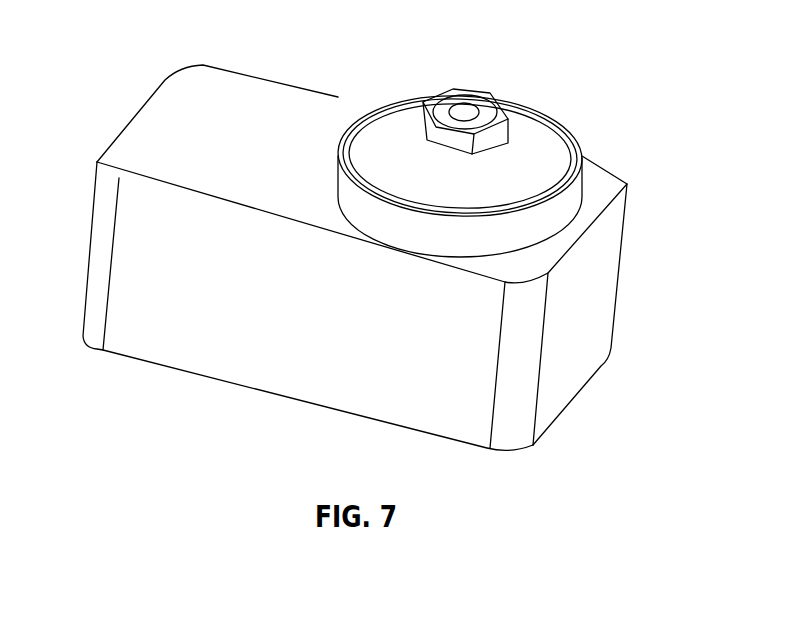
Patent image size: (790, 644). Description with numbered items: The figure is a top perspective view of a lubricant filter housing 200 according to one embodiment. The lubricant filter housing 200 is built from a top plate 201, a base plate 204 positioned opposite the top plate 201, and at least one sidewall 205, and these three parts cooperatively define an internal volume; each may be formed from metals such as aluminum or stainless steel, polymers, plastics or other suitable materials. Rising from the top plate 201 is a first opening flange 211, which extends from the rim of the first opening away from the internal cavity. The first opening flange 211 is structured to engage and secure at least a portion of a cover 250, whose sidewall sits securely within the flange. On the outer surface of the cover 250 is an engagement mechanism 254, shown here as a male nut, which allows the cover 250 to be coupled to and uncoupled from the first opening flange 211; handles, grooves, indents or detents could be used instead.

The lubricant filter housing 200 is at (348, 82).
The top plate 201 is at (265, 93).
The base plate 204 is at (243, 387).
The sidewall 205 is at (605, 268).
The first opening flange 211 is at (570, 210).
The cover 250 is at (557, 141).
The engagement mechanism 254 is at (493, 104).